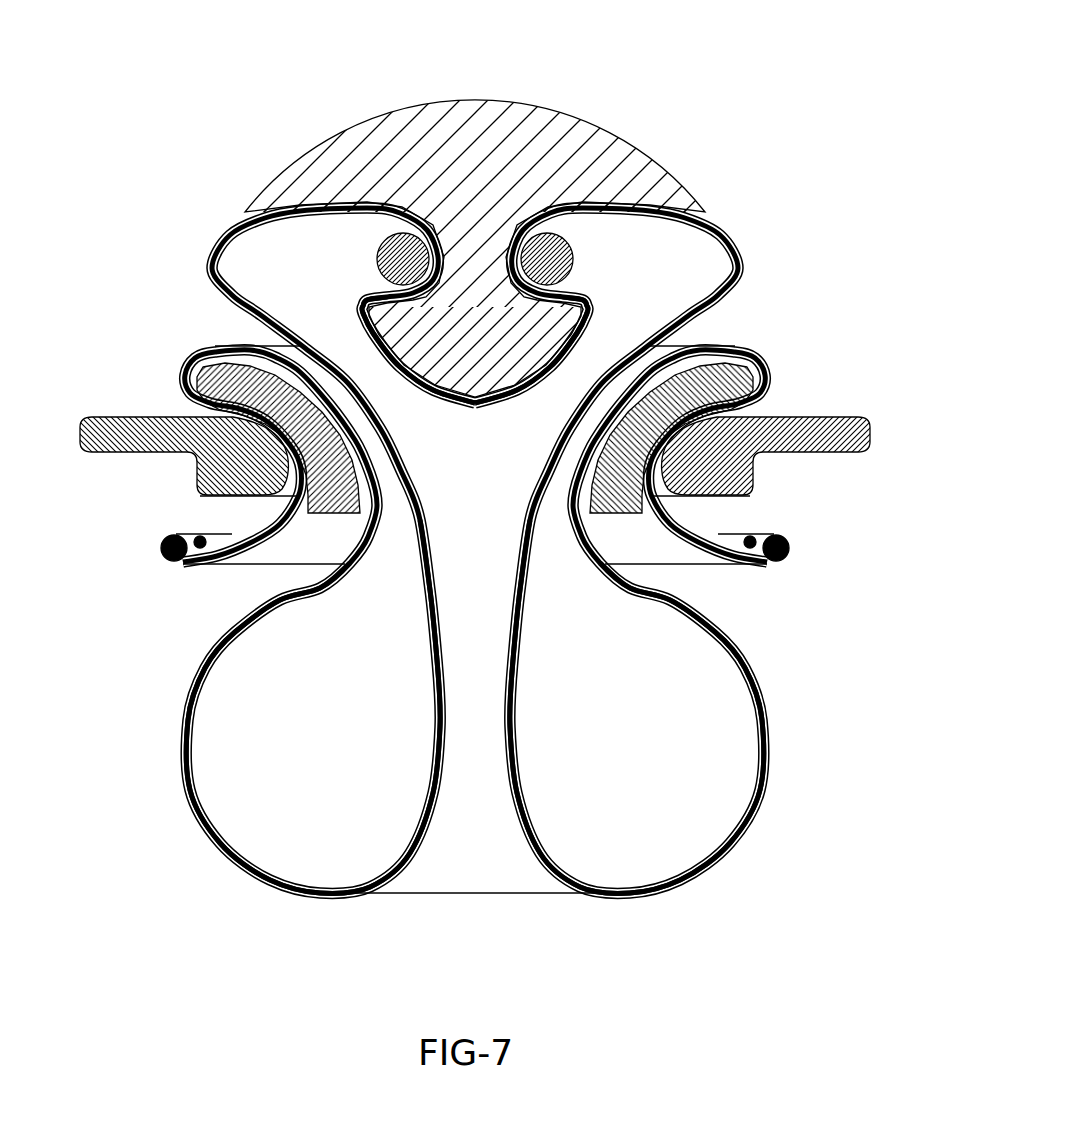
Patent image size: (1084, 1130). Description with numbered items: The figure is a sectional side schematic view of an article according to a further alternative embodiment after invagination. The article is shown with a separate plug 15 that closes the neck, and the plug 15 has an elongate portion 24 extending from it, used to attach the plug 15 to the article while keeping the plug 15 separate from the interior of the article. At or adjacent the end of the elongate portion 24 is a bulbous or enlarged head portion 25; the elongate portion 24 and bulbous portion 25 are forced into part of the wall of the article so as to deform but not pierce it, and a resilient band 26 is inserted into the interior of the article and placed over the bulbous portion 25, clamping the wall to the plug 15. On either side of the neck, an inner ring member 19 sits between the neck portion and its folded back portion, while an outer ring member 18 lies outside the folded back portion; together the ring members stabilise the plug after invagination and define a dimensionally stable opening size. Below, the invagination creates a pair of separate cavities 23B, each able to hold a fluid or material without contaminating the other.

The plug 15 is at (571, 99).
The elongate portion 24 is at (492, 246).
The bulbous head portion 25 is at (452, 338).
The resilient band 26 is at (390, 245).
The inner ring member 19 is at (194, 369).
The outer ring member 18 is at (91, 465).
The cavity 23B is at (474, 706).